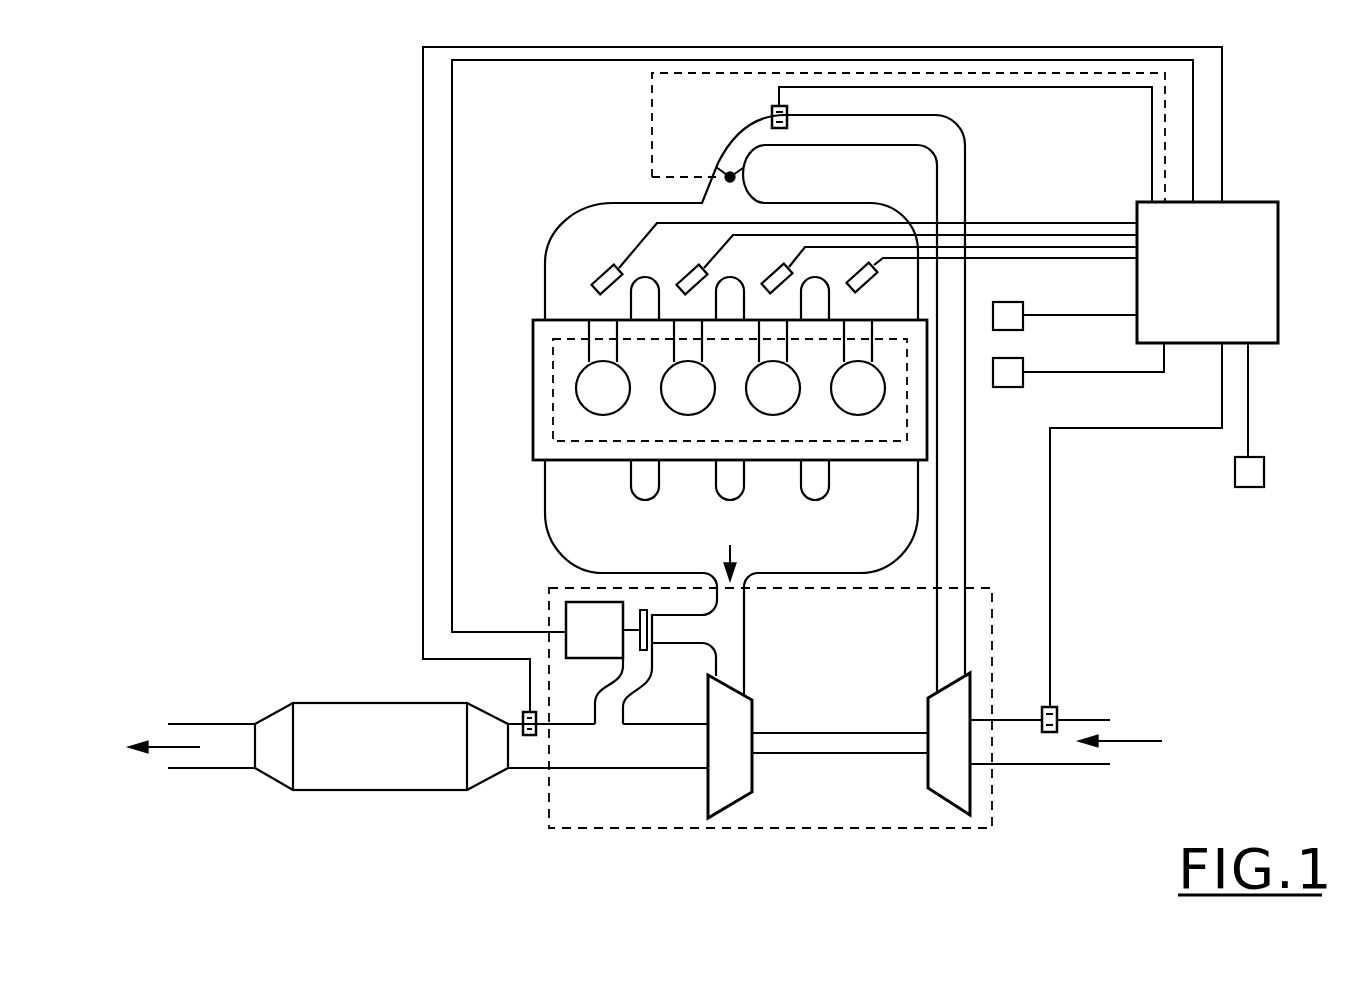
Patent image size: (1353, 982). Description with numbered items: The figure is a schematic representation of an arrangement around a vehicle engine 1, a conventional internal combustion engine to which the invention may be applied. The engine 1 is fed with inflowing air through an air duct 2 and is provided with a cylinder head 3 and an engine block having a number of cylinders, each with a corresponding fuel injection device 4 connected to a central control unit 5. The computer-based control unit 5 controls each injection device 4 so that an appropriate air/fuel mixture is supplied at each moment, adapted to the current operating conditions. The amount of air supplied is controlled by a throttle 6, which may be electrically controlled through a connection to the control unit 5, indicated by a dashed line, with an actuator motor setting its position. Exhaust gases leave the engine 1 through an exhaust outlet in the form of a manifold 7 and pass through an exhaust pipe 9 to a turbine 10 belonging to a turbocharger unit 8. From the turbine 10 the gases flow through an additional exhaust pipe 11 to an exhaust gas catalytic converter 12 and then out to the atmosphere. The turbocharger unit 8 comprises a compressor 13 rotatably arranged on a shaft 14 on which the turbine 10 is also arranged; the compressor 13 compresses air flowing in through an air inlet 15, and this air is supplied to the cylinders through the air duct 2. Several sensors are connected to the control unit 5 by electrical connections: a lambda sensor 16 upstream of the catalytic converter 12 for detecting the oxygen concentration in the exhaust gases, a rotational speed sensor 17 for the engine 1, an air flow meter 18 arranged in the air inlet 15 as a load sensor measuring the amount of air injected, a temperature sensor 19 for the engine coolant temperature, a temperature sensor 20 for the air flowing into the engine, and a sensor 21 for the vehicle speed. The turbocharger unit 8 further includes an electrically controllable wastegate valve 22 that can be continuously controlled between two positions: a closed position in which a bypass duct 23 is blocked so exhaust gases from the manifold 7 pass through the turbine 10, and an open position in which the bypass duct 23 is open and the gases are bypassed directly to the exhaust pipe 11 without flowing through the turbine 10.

The engine 1 is at (513, 403).
The air duct 2 is at (958, 178).
The cylinder head 3 is at (548, 375).
The fuel injection devices 4 is at (605, 275).
The central control unit 5 is at (1253, 202).
The throttle 6 is at (727, 174).
The exhaust manifold 7 is at (543, 513).
The turbocharger unit 8 is at (993, 660).
The exhaust pipe 9 is at (735, 602).
The turbine 10 is at (733, 790).
The additional exhaust pipe 11 is at (587, 768).
The exhaust gas catalytic converter 12 is at (372, 781).
The compressor 13 is at (950, 790).
The shaft 14 is at (818, 755).
The air inlet 15 is at (1020, 764).
The lambda sensor 16 is at (523, 712).
The rotational speed sensor 17 is at (1023, 328).
The air flow meter 18 is at (1057, 715).
The temperature sensor 19 is at (1255, 487).
The temperature sensor 20 is at (772, 108).
The vehicle speed sensor 21 is at (1023, 385).
The wastegate valve 22 is at (572, 610).
The bypass duct 23 is at (612, 692).